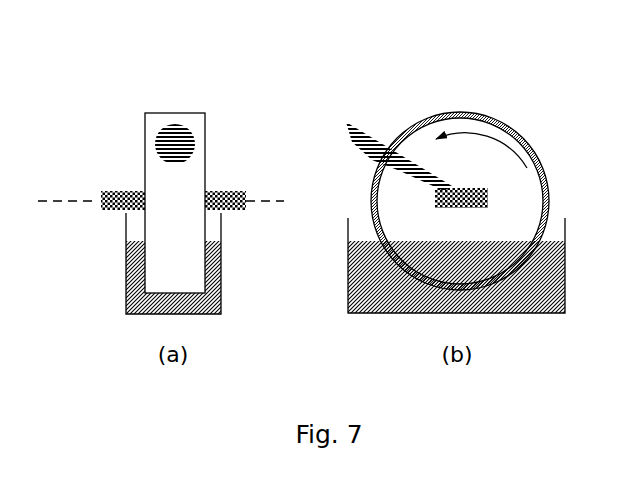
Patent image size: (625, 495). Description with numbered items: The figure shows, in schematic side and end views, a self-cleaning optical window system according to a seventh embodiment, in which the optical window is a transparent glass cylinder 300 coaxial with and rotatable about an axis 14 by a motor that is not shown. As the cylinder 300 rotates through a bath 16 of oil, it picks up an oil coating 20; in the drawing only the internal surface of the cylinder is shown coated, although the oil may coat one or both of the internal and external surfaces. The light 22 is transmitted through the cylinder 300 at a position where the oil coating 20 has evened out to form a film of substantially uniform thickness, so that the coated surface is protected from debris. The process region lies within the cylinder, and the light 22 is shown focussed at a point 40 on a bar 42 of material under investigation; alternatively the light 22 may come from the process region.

The transparent glass cylinder 300 is at (458, 111).
The light 22 is at (190, 144).
The oil coating 20 is at (396, 144).
The point 40 is at (449, 187).
The bar 42 is at (459, 194).
The axis 14 is at (72, 202).
The bath 16 is at (379, 302).